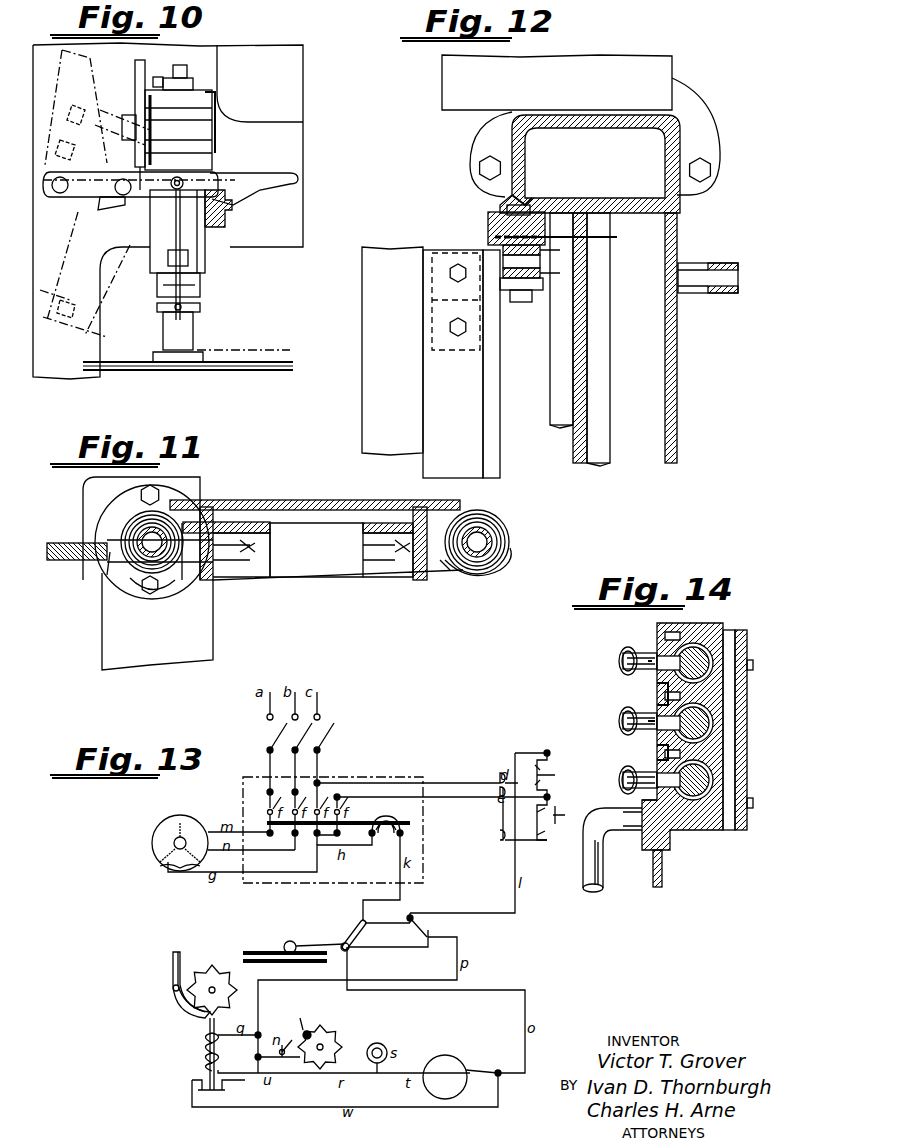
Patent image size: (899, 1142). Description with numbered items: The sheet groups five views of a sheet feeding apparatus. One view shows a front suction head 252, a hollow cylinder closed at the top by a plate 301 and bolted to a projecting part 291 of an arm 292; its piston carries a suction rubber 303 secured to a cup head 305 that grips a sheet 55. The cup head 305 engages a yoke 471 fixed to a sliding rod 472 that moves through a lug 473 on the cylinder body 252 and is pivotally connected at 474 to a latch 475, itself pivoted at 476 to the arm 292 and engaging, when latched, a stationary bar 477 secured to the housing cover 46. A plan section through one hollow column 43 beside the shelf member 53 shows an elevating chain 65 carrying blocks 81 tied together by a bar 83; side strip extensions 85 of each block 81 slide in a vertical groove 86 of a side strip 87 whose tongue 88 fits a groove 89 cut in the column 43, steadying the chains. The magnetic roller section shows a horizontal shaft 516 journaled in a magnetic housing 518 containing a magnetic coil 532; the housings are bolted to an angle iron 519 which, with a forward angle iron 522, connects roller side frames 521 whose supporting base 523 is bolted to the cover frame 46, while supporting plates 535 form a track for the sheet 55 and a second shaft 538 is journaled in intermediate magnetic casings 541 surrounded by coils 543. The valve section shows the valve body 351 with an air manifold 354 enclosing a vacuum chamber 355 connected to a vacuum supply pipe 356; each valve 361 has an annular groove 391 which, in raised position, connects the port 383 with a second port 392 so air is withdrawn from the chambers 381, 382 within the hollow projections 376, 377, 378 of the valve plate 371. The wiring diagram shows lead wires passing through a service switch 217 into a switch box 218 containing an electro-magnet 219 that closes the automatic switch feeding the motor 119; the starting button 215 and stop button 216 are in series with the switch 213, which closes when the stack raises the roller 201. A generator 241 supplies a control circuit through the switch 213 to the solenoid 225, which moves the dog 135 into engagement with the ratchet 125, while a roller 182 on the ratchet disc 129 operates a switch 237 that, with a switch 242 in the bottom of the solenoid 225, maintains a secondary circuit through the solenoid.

In FIG. 10, the front suction head 252 is at (213, 136).
In FIG. 10, the plate 301 is at (215, 95).
In FIG. 10, the arm 292 is at (140, 64).
In FIG. 10, the projecting part 291 is at (128, 140).
In FIG. 10, the pivotal connection 474 is at (182, 181).
In FIG. 10, the latch 475 is at (272, 178).
In FIG. 10, the pivotal connection 476 is at (113, 199).
In FIG. 10, the stationary bar 477 is at (222, 226).
In FIG. 10, the sliding rod 472 is at (182, 237).
In FIG. 10, the lug 473 is at (186, 257).
In FIG. 10, the yoke 471 is at (200, 307).
In FIG. 10, the cup head 305 is at (200, 355).
In FIG. 10, the suction rubber 303 is at (195, 370).
In FIG. 10, the sheets 55 is at (278, 350).
In FIG. 12, the sheets 55 is at (371, 303).
In FIG. 11, the sheets 55 is at (62, 562).
In FIG. 12, the shelf member 53 is at (557, 82).
In FIG. 12, the hollow columns 43 is at (677, 150).
In FIG. 12, the side strip 87 is at (490, 222).
In FIG. 12, the tongue 88 is at (535, 208).
In FIG. 12, the groove 89 is at (522, 199).
In FIG. 12, the vertical groove 86 is at (495, 240).
In FIG. 12, the side strip extensions 85 is at (575, 242).
In FIG. 12, the blocks 81 is at (530, 305).
In FIG. 12, the bar 83 is at (494, 388).
In FIG. 12, the elevating chains 65 is at (720, 265).
In FIG. 11, the housing cover 46 is at (195, 487).
In FIG. 14, the housing cover 46 is at (655, 887).
In FIG. 11, the supporting base 523 is at (110, 510).
In FIG. 11, the horizontal shaft 538 is at (500, 520).
In FIG. 11, the supporting plates 535 is at (322, 503).
In FIG. 11, the angle iron 519 is at (255, 522).
In FIG. 11, the forward angle iron 522 is at (378, 523).
In FIG. 11, the roller side frames 521 is at (320, 577).
In FIG. 11, the magnetic coils 543 is at (508, 545).
In FIG. 11, the intermediate magnetic casings 541 is at (470, 575).
In FIG. 11, the horizontal shaft 516 is at (107, 568).
In FIG. 11, the magnetic housing 518 is at (112, 585).
In FIG. 11, the magnetic coil 532 is at (165, 590).
In FIG. 14, the valve 361 is at (708, 648).
In FIG. 14, the annular groove 391 is at (712, 660).
In FIG. 14, the second port 392 is at (725, 770).
In FIG. 14, the air manifold 354 is at (740, 710).
In FIG. 14, the manifold chamber 355 is at (740, 688).
In FIG. 14, the valve body 351 is at (735, 750).
In FIG. 14, the hollow projection 376 is at (620, 665).
In FIG. 14, the hollow projection 377 is at (620, 727).
In FIG. 14, the hollow projection 378 is at (620, 782).
In FIG. 14, the chamber 381 is at (648, 658).
In FIG. 14, the chamber 382 is at (640, 720).
In FIG. 14, the air passage 383 is at (657, 760).
In FIG. 14, the valve plate 371 is at (657, 704).
In FIG. 14, the vacuum supply pipe 356 is at (600, 888).
In FIG. 13, the service switch 217 is at (315, 736).
In FIG. 13, the switch box 218 is at (393, 777).
In FIG. 13, the electro-magnet 219 is at (388, 818).
In FIG. 13, the electric motor 119 is at (155, 840).
In FIG. 13, the stop button 216 is at (559, 775).
In FIG. 13, the starting button 215 is at (565, 819).
In FIG. 13, the electric switch 213 is at (422, 920).
In FIG. 13, the roller 201 is at (290, 941).
In FIG. 13, the ratchet 125 is at (212, 968).
In FIG. 13, the dog 135 is at (175, 1008).
In FIG. 13, the solenoid 225 is at (205, 1052).
In FIG. 13, the switch 242 is at (345, 1090).
In FIG. 13, the switch 237 is at (285, 1056).
In FIG. 13, the ratchet disc 129 is at (338, 1040).
In FIG. 13, the roller 182 is at (307, 1031).
In FIG. 13, the generator 241 is at (455, 1058).